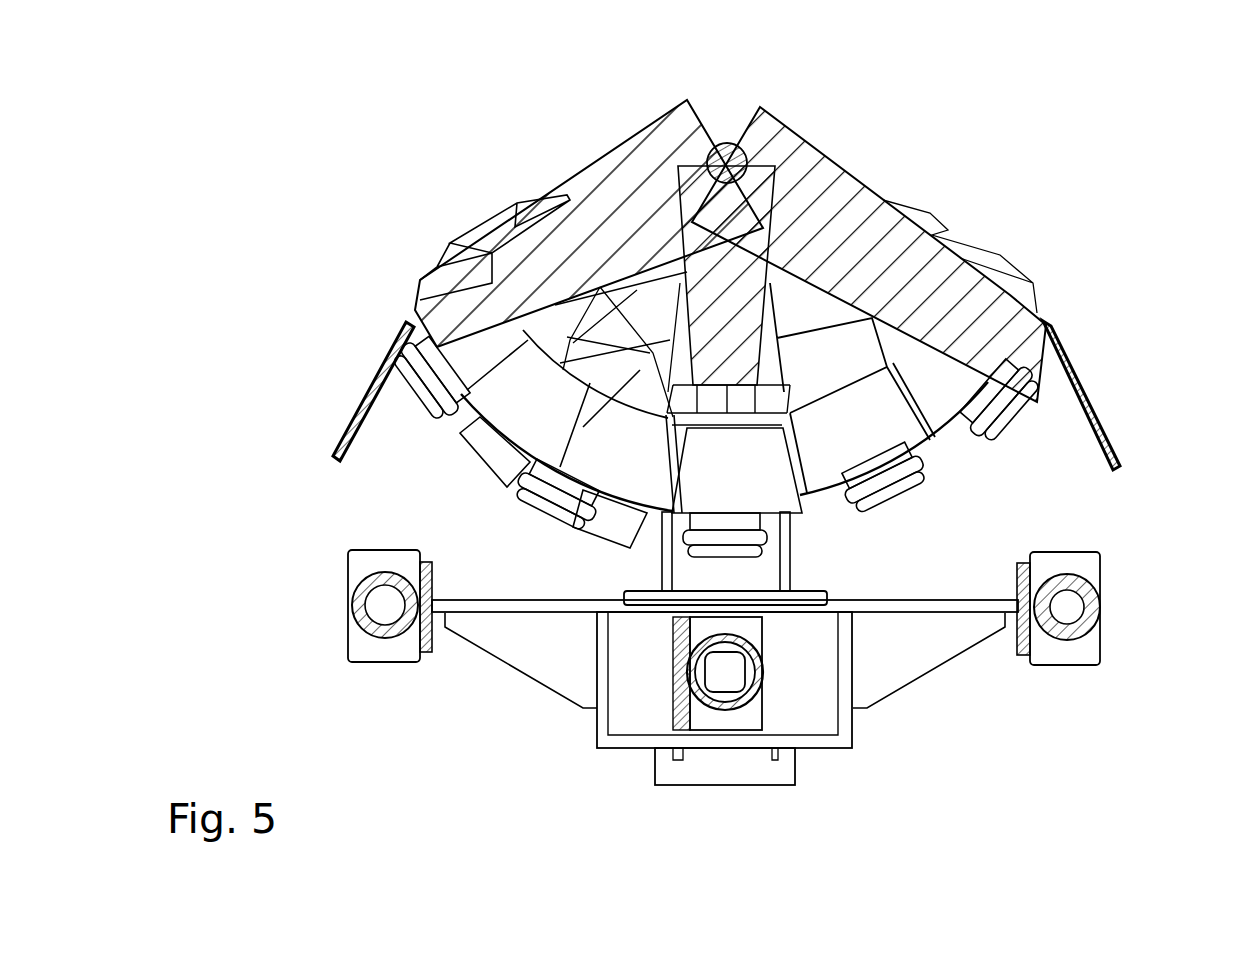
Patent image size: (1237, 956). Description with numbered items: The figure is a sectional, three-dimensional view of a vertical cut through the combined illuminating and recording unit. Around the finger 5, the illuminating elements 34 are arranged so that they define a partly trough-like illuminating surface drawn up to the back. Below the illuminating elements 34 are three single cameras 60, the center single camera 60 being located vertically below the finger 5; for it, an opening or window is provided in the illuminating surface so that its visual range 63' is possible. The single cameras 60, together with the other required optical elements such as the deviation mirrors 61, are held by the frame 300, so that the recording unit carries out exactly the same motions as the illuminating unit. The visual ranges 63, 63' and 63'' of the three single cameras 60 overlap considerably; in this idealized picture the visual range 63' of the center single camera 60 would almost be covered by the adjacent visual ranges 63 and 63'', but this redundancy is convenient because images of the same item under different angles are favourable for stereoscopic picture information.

The finger 5 is at (722, 142).
The illuminating elements 34 is at (518, 208).
The single cameras 60 is at (352, 612).
The deviation mirrors 61 is at (367, 397).
The visual range 63 is at (869, 249).
The visual range 63' is at (776, 216).
The visual range 63'' is at (589, 192).
The frame 300 is at (782, 573).